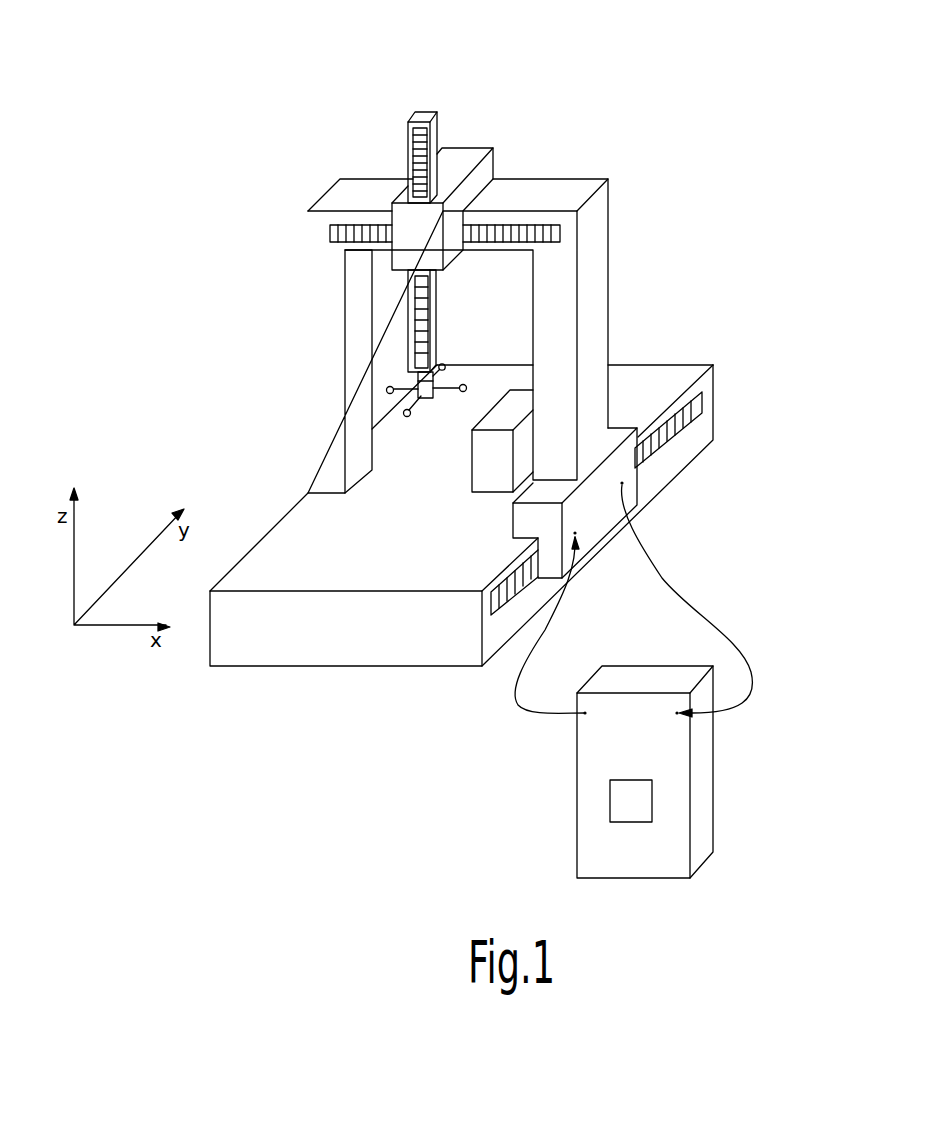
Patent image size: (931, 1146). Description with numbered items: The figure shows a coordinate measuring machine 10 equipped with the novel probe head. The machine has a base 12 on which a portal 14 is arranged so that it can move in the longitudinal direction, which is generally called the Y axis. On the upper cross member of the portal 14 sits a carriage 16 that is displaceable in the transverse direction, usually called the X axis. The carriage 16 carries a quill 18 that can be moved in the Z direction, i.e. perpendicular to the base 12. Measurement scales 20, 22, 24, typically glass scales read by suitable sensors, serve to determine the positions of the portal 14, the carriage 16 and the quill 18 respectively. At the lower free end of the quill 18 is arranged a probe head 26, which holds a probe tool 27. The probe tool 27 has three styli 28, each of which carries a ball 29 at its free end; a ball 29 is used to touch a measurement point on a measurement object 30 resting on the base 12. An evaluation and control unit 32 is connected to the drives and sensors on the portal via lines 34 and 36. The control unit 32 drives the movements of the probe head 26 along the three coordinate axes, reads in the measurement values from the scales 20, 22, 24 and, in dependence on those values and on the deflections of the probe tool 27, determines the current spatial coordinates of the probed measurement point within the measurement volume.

The coordinate measuring machine 10 is at (440, 456).
The base 12 is at (298, 548).
The portal 14 is at (590, 290).
The carriage 16 is at (472, 152).
The quill 18 is at (428, 110).
The measurement scale 20 is at (717, 391).
The measurement scale 22 is at (523, 227).
The measurement scale 24 is at (410, 135).
The probe head 26 is at (436, 371).
The probe tool 27 is at (394, 372).
The styli 28 is at (397, 384).
The ball 29 is at (387, 388).
The measurement object 30 is at (490, 471).
The evaluation and control unit 32 is at (682, 853).
The line 34 is at (567, 612).
The line 36 is at (697, 597).